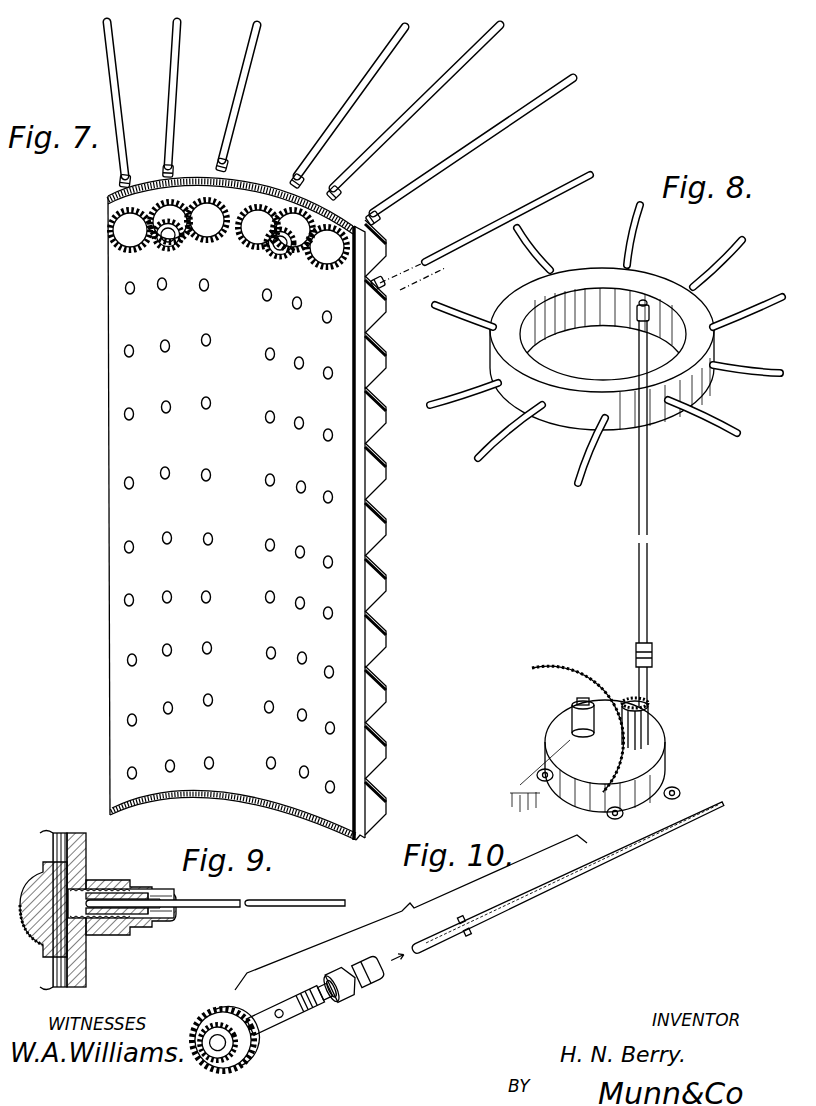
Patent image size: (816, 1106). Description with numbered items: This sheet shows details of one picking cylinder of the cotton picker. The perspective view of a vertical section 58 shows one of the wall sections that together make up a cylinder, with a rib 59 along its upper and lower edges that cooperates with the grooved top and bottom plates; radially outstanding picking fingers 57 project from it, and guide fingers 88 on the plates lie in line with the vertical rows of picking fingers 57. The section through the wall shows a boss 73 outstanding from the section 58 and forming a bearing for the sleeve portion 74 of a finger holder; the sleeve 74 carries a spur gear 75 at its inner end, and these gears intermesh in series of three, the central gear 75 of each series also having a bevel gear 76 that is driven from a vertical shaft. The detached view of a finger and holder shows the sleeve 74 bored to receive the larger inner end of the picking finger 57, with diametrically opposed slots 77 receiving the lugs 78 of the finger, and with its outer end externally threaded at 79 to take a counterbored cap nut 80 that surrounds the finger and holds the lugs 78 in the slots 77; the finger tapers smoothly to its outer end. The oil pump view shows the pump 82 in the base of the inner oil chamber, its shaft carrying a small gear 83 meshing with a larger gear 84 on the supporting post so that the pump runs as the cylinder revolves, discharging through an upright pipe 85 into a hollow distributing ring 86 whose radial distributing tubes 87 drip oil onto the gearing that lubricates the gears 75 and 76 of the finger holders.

In FIG. 7, the picking finger 57 is at (446, 251).
In FIG. 9, the picking finger 57 is at (234, 910).
In FIG. 10, the picking finger 57 is at (553, 890).
In FIG. 7, the vertical section 58 is at (345, 469).
In FIG. 9, the vertical section 58 is at (80, 840).
In FIG. 7, the rib 59 is at (255, 178).
In FIG. 9, the boss 73 is at (100, 883).
In FIG. 9, the sleeve portion 74 is at (90, 916).
In FIG. 10, the sleeve portion 74 is at (297, 1022).
In FIG. 7, the spur gear 75 is at (172, 208).
In FIG. 9, the spur gear 75 is at (58, 953).
In FIG. 10, the spur gear 75 is at (252, 1070).
In FIG. 7, the bevel gear 76 is at (171, 250).
In FIG. 9, the bevel gear 76 is at (43, 878).
In FIG. 10, the bevel gear 76 is at (225, 1072).
In FIG. 10, the slot 77 is at (337, 980).
In FIG. 9, the lug 78 is at (146, 893).
In FIG. 10, the lug 78 is at (465, 917).
In FIG. 10, the external thread 79 is at (326, 995).
In FIG. 7, the cap nut 80 is at (128, 176).
In FIG. 10, the cap nut 80 is at (368, 968).
In FIG. 8, the pump 82 is at (580, 746).
In FIG. 8, the small gear 83 is at (650, 723).
In FIG. 8, the larger gear 84 is at (572, 693).
In FIG. 8, the upright pipe 85 is at (650, 622).
In FIG. 8, the distributing ring 86 is at (572, 388).
In FIG. 8, the distributing tube 87 is at (636, 245).
In FIG. 7, the guide finger 88 is at (466, 152).